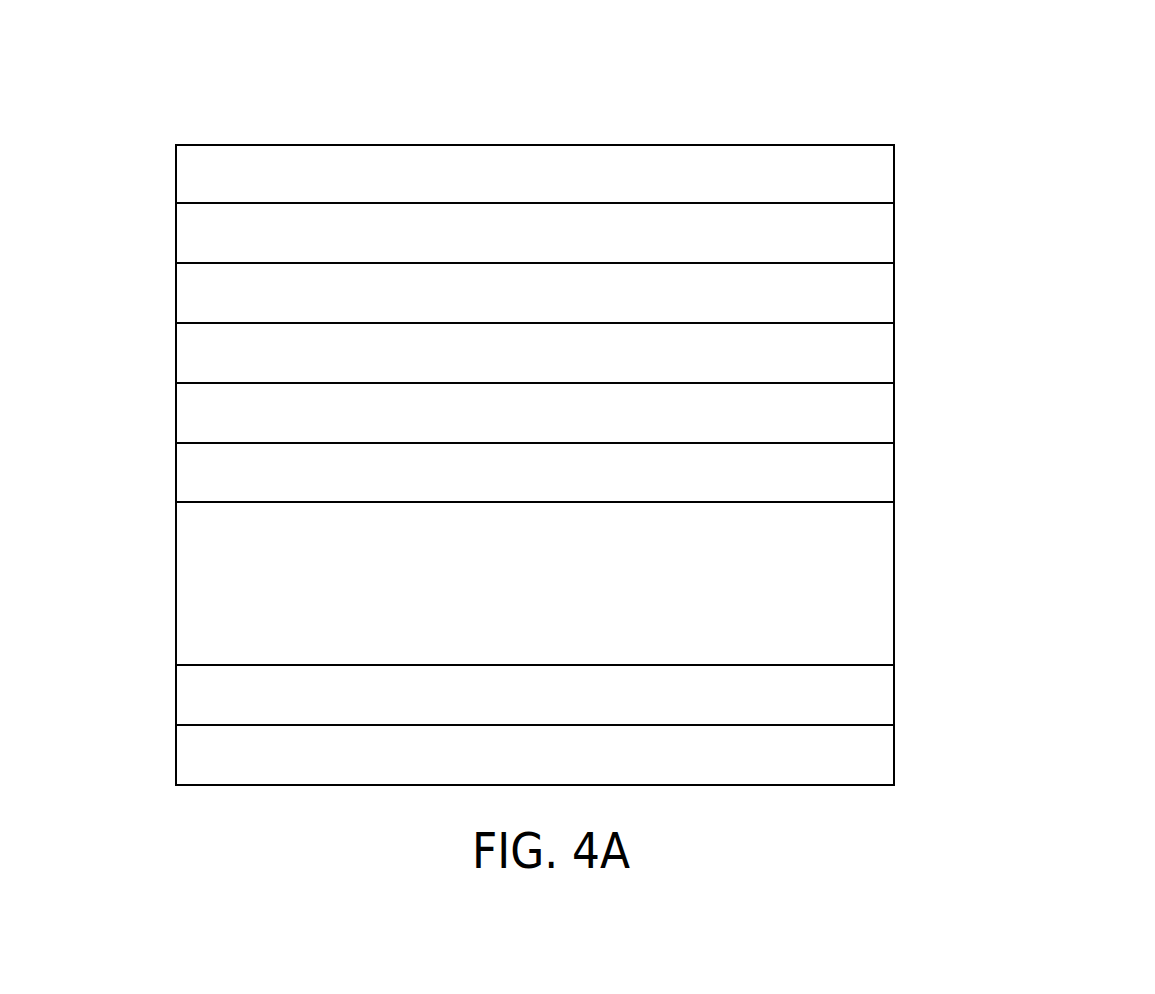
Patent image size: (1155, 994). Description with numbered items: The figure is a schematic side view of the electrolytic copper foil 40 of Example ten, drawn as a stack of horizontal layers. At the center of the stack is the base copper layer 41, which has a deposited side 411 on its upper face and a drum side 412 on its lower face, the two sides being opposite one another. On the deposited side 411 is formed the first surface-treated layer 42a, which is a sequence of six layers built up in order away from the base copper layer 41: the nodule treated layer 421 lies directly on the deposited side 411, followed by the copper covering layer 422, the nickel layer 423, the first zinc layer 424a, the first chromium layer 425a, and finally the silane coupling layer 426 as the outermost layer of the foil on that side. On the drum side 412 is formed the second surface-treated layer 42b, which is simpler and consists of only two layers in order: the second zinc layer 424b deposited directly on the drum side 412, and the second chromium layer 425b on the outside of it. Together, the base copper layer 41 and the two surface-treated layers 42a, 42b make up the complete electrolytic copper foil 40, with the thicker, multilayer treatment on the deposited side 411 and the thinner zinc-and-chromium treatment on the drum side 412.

The electrolytic copper foil 40 is at (1028, 140).
The base copper layer 41 is at (863, 588).
The deposited side 411 is at (894, 502).
The drum side 412 is at (894, 665).
The first surface-treated layer 42a is at (962, 146).
The second surface-treated layer 42b is at (962, 665).
The nodule treated layer 421 is at (185, 477).
The copper covering layer 422 is at (185, 418).
The nickel layer 423 is at (185, 360).
The first zinc layer 424a is at (185, 297).
The second zinc layer 424b is at (185, 698).
The first chromium layer 425a is at (185, 238).
The second chromium layer 425b is at (185, 758).
The silane coupling layer 426 is at (185, 177).